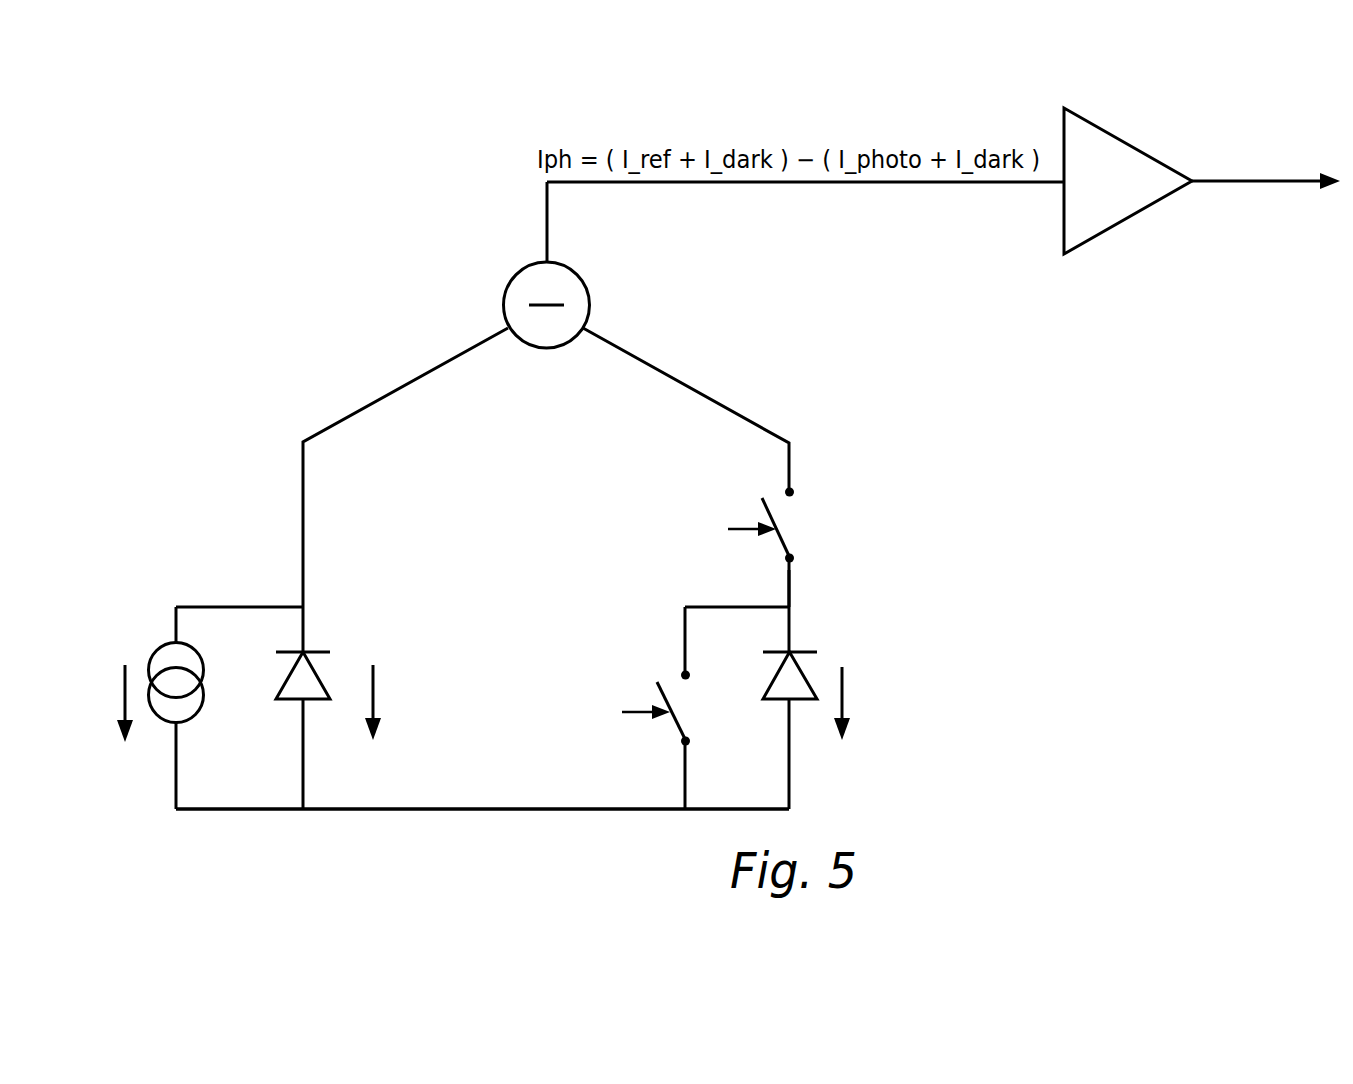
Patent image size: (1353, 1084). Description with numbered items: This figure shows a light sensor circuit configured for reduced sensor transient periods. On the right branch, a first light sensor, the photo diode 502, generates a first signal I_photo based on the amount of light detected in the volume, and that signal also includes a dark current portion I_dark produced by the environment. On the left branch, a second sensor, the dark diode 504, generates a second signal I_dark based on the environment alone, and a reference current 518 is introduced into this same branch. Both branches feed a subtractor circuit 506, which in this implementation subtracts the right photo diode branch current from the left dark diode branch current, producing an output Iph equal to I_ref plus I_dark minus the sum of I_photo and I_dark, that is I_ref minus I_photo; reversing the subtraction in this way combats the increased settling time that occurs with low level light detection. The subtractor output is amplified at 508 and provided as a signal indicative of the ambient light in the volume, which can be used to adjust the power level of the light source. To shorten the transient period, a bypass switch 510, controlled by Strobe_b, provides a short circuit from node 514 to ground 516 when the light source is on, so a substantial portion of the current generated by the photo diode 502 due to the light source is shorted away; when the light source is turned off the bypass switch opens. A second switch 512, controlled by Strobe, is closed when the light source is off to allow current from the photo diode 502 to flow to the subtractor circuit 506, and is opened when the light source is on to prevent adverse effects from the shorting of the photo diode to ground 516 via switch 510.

The first light sensor (photo diode) 502 is at (808, 672).
The second sensor (dark diode) 504 is at (318, 677).
The subtractor circuit 506 is at (504, 303).
The amplifier 508 is at (1125, 226).
The bypass switch 510 is at (688, 697).
The second switch 512 is at (797, 521).
The node 514 is at (793, 580).
The ground 516 is at (432, 810).
The reference current 518 is at (152, 651).